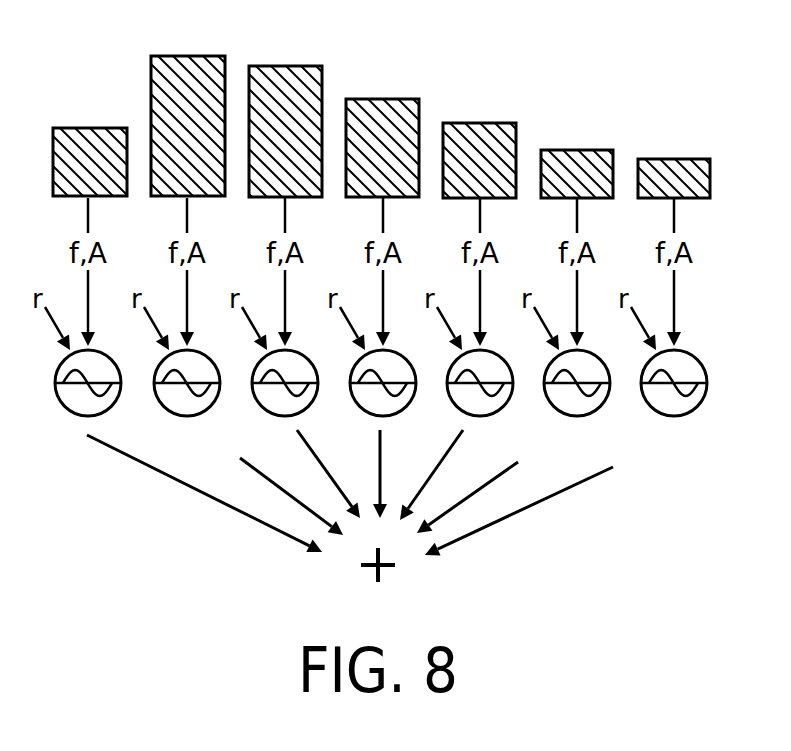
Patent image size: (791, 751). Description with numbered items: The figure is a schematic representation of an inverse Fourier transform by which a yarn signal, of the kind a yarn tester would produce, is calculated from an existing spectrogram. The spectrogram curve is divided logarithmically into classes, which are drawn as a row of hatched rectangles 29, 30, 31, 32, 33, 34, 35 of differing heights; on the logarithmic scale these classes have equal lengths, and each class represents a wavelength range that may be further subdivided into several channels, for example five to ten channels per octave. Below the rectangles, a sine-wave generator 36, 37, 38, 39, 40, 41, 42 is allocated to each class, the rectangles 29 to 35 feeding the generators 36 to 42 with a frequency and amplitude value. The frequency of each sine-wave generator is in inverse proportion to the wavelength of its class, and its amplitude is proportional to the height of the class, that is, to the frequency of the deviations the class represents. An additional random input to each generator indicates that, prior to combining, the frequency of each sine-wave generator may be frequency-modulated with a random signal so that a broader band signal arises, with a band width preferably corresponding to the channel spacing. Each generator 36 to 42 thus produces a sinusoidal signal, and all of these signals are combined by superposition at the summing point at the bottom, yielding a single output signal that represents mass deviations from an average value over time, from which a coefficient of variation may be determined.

The class rectangle 29 is at (87, 128).
The class rectangle 30 is at (185, 56).
The class rectangle 31 is at (283, 66).
The class rectangle 32 is at (380, 99).
The class rectangle 33 is at (475, 123).
The class rectangle 34 is at (575, 150).
The class rectangle 35 is at (673, 159).
The sine-wave generator 36 is at (63, 407).
The sine-wave generator 37 is at (165, 407).
The sine-wave generator 38 is at (262, 406).
The sine-wave generator 39 is at (360, 406).
The sine-wave generator 40 is at (455, 407).
The sine-wave generator 41 is at (548, 408).
The sine-wave generator 42 is at (647, 408).